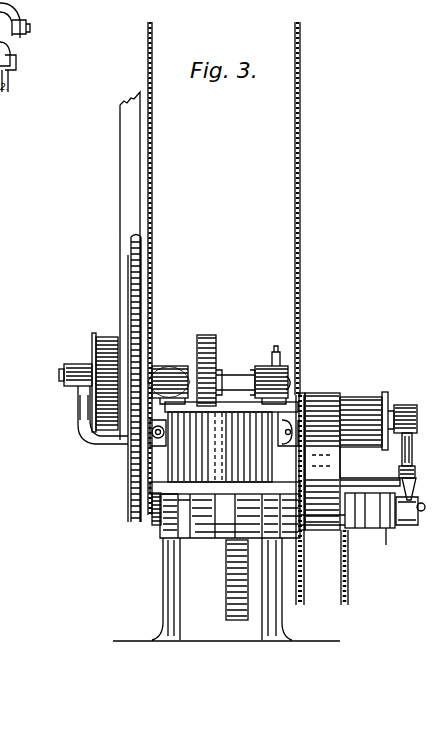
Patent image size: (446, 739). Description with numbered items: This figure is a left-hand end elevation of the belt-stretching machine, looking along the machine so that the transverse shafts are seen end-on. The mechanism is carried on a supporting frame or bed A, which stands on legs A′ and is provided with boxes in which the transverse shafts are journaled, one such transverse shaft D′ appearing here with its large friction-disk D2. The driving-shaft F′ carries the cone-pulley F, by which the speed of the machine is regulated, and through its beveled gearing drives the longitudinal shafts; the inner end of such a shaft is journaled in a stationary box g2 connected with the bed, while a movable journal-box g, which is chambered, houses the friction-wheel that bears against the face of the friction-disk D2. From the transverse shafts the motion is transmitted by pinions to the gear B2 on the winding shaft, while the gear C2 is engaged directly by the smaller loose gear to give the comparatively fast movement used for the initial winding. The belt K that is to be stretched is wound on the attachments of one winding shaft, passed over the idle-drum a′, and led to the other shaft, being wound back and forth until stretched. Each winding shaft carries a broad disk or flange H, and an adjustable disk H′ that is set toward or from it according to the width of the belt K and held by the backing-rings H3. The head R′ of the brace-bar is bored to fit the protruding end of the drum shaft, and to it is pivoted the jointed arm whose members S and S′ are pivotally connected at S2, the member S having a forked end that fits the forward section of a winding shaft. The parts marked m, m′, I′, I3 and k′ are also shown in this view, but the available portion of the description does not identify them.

The belt m is at (153, 297).
The friction-disk D2 is at (130, 482).
The cone-pulley F is at (105, 331).
The driving-shaft F′ is at (63, 375).
The movable journal-box g is at (171, 360).
The gear C2 is at (212, 331).
The transverse shaft D′ is at (238, 372).
The stationary box g2 is at (278, 358).
The supporting frame or bed A is at (231, 442).
The bearing m′ is at (158, 447).
The gear frame I′ is at (215, 538).
The legs A′ is at (154, 633).
The gear B2 is at (226, 612).
The belt K is at (325, 391).
The idle-drum a′ is at (360, 397).
The head of brace-bar R′ is at (408, 401).
The arm member S′ is at (413, 449).
The pivot S2 is at (416, 472).
The arm member S is at (419, 491).
The backing-ring H3 is at (371, 489).
The shaft I3 is at (312, 542).
The lever k′ is at (390, 532).
The disk or flange H is at (301, 510).
The adjustable disk H′ is at (346, 606).